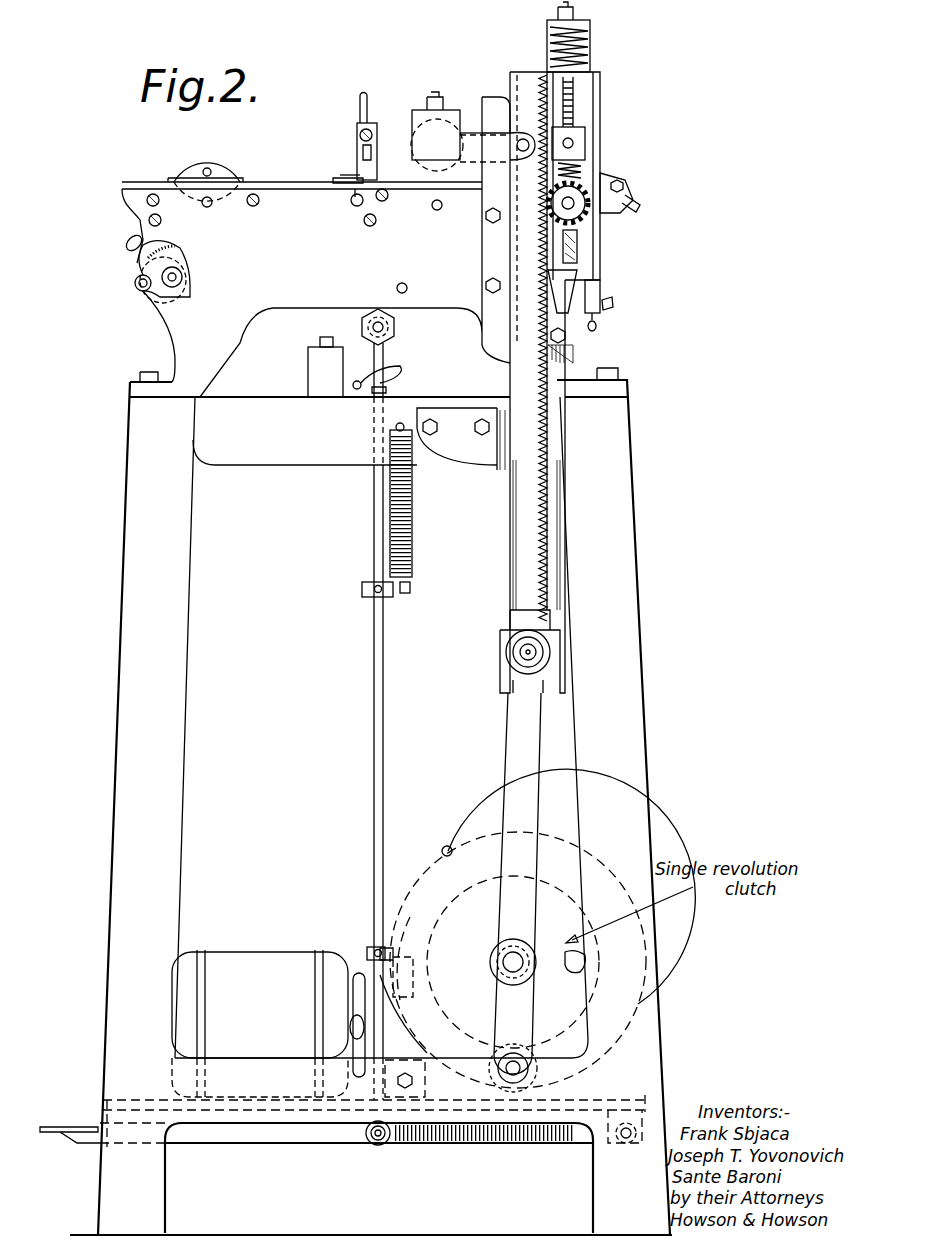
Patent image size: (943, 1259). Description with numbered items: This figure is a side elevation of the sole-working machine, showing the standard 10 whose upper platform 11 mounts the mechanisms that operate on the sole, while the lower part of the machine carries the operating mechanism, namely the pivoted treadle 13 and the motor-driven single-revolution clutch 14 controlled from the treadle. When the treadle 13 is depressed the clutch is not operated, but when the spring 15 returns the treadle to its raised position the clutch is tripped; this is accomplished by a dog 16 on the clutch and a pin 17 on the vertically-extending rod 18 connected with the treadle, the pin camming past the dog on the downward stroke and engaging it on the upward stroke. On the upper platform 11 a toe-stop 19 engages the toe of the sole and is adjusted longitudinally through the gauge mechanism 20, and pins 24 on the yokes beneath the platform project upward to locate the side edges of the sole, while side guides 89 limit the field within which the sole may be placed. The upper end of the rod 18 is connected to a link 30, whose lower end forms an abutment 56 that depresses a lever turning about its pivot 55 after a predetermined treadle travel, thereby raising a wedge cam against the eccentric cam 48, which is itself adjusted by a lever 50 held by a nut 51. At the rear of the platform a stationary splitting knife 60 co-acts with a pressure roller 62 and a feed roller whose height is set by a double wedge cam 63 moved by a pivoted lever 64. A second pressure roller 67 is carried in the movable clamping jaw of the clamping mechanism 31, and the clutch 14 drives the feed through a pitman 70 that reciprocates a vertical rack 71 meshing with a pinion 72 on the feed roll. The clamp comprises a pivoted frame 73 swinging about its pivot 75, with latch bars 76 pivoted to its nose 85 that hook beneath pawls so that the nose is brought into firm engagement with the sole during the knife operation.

The standard 10 is at (316, 247).
The upper platform 11 is at (295, 182).
The treadle 13 is at (487, 1138).
The single-revolution clutch 14 is at (466, 840).
The spring 15 is at (407, 540).
The dog 16 is at (380, 952).
The pin 17 is at (410, 917).
The vertically-extending rod 18 is at (385, 700).
The toe-stop 19 is at (245, 180).
The gauge mechanism 20 is at (223, 165).
The pins 24 is at (358, 192).
The link 30 is at (398, 318).
The clamping mechanism 31 is at (395, 147).
The eccentric cam 48 is at (143, 291).
The lever 50 is at (178, 255).
The nut 51 is at (134, 249).
The pivot 55 is at (357, 381).
The abutment 56 is at (358, 328).
The stationary splitting knife 60 is at (600, 177).
The pressure roller 62 is at (573, 125).
The double wedge cam 63 is at (577, 243).
The pivoted lever 64 is at (593, 292).
The pressure roller 67 is at (440, 158).
The pitman 70 is at (527, 760).
The rack 71 is at (527, 518).
The pinion 72 is at (580, 220).
The pivoted frame 73 is at (478, 130).
The pivot 75 is at (526, 135).
The latch bars 76 is at (362, 133).
The nose 85 is at (357, 170).
The side guides 89 is at (343, 174).